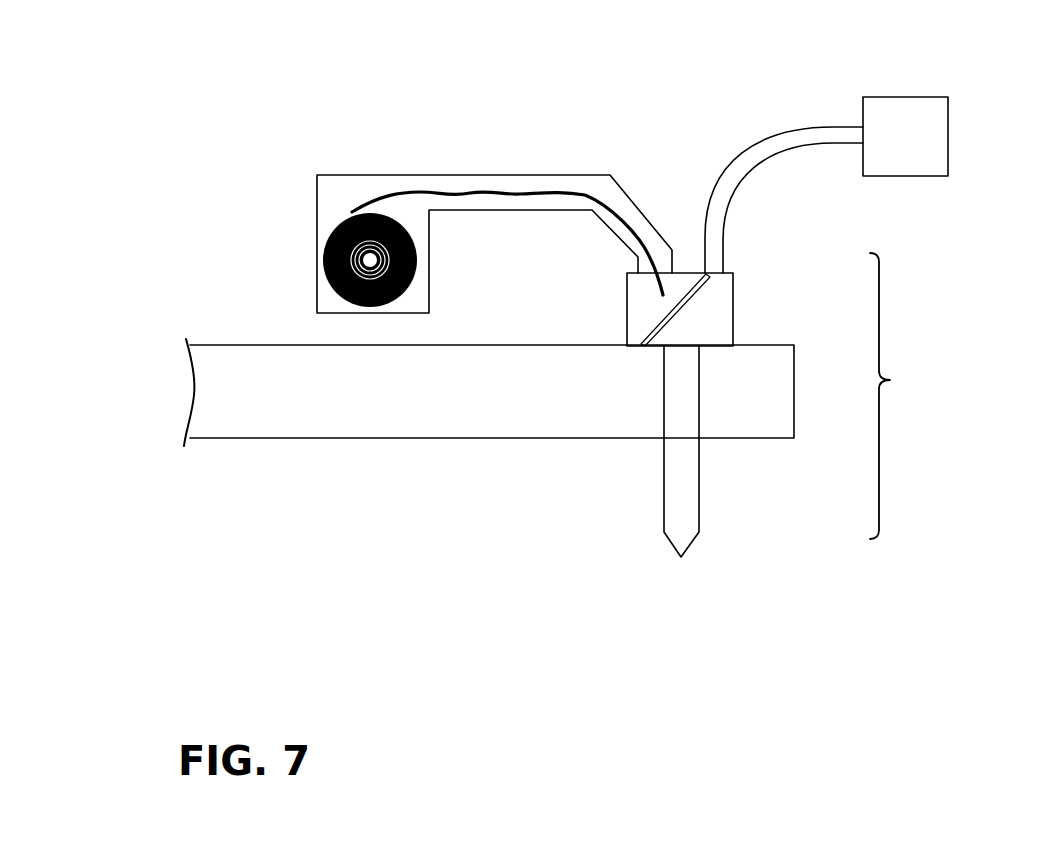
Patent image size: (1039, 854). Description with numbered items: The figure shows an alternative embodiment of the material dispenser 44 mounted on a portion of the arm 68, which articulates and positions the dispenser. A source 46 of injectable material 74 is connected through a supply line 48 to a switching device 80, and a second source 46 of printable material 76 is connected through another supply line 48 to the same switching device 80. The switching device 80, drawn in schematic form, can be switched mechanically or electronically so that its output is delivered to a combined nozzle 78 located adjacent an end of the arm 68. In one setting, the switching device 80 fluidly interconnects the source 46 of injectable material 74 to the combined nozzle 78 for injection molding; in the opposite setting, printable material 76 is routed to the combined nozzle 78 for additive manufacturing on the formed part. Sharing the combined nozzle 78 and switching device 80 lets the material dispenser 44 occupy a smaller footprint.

The material dispenser 44 is at (895, 396).
The source 46 is at (327, 170).
The supply line 48 is at (628, 196).
The arm 68 is at (257, 370).
The injectable material 74 is at (937, 116).
The printable material 76 is at (350, 212).
The combined nozzle 78 is at (707, 493).
The switching device 80 is at (741, 314).